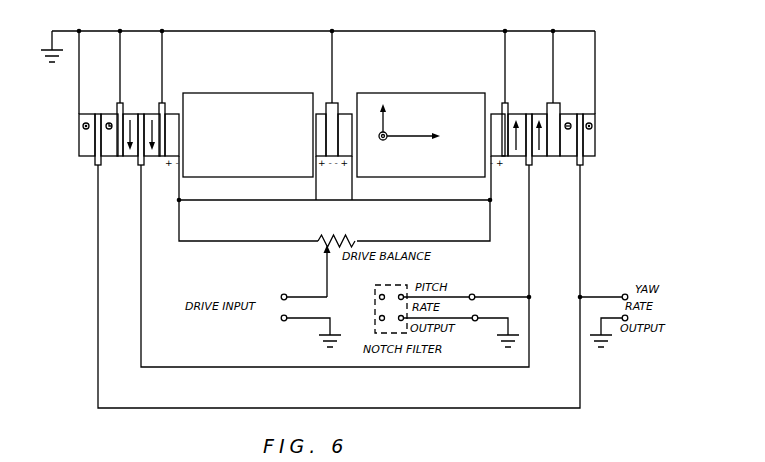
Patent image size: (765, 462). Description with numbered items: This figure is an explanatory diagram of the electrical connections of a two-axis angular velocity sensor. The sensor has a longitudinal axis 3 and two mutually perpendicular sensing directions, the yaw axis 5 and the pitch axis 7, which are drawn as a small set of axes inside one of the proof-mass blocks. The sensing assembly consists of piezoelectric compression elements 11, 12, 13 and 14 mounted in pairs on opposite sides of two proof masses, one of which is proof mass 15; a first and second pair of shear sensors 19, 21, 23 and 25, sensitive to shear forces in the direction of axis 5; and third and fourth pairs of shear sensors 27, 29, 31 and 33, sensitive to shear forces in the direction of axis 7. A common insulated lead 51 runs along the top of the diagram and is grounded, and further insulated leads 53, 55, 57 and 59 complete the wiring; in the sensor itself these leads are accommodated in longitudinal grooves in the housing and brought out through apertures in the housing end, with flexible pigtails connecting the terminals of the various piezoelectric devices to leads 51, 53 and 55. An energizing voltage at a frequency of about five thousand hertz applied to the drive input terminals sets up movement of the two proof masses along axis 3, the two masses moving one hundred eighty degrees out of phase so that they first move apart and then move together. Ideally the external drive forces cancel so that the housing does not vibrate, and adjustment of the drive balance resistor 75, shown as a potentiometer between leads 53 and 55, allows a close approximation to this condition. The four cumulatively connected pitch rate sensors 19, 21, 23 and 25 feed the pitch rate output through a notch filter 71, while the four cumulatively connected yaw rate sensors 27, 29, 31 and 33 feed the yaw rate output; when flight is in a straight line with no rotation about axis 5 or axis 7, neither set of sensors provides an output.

The longitudinal axis 3 is at (398, 135).
The yaw axis 5 is at (385, 118).
The pitch axis 7 is at (382, 141).
The piezoelectric compression element 11 is at (176, 130).
The piezoelectric compression element 12 is at (322, 128).
The piezoelectric compression element 13 is at (342, 117).
The piezoelectric compression element 14 is at (493, 127).
The proof mass 15 is at (222, 98).
The shear sensor 19 is at (130, 113).
The shear sensor 21 is at (152, 157).
The shear sensor 23 is at (520, 113).
The shear sensor 25 is at (540, 154).
The shear sensor 27 is at (80, 154).
The shear sensor 29 is at (111, 113).
The shear sensor 31 is at (567, 113).
The shear sensor 33 is at (592, 115).
The insulated lead 51 is at (215, 31).
The insulated lead 53 is at (207, 240).
The insulated lead 55 is at (378, 240).
The insulated lead 57 is at (147, 366).
The insulated lead 59 is at (135, 406).
The notch filter 71 is at (373, 287).
The drive balance resistor 75 is at (320, 239).